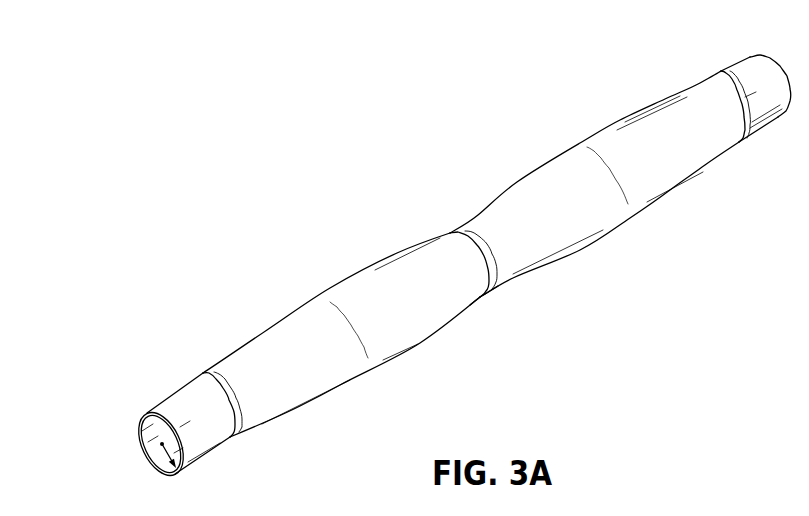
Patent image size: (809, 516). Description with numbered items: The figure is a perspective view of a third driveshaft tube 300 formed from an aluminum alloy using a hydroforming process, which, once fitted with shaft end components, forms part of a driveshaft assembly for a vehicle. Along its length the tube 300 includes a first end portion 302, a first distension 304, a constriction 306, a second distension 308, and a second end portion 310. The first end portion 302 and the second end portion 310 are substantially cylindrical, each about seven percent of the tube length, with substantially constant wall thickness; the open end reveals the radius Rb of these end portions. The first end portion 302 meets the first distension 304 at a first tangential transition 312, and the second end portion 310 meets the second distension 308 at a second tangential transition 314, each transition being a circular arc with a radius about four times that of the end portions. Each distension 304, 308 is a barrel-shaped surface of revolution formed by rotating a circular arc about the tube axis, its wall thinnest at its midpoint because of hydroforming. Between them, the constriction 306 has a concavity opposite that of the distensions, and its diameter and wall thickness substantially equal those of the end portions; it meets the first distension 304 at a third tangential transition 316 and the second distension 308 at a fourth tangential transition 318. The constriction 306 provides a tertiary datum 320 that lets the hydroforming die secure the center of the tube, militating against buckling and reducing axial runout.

The third driveshaft tube 300 is at (228, 132).
The first end portion 302 is at (167, 408).
The first distension 304 is at (323, 292).
The constriction 306 is at (462, 228).
The second distension 308 is at (582, 145).
The second end portion 310 is at (721, 71).
The first tangential transition 312 is at (203, 373).
The second tangential transition 314 is at (739, 142).
The third tangential transition 316 is at (450, 233).
The fourth tangential transition 318 is at (497, 276).
The tertiary datum 320 is at (488, 304).
The radius of the first end portion and second end portion Rb is at (153, 455).